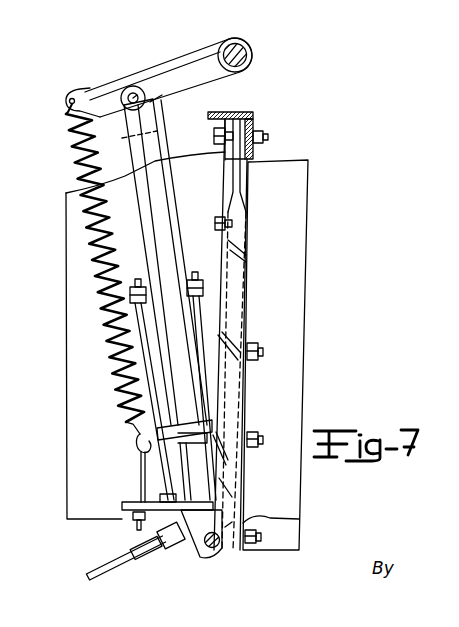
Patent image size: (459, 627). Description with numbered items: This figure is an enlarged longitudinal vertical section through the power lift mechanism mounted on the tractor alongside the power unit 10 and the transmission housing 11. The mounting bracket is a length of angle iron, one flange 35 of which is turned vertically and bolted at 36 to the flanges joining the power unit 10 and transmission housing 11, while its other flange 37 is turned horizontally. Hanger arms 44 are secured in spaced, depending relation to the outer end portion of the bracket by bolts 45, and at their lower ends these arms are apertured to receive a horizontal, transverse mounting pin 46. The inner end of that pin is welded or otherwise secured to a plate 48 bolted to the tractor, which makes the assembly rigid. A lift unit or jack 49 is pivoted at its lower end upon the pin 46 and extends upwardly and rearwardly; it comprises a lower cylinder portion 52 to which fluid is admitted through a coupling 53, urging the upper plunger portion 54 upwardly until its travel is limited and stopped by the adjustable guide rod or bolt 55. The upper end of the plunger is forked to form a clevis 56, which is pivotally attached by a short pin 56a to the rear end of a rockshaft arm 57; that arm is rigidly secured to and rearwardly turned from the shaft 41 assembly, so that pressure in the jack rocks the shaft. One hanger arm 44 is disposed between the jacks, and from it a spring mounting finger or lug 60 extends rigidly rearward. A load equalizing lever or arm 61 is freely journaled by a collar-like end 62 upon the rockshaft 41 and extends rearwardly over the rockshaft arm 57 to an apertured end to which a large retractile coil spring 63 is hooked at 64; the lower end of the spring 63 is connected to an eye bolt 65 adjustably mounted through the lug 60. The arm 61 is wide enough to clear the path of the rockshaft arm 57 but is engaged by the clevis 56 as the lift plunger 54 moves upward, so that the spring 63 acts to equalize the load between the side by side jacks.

The power unit 10 is at (308, 164).
The transmission housing 11 is at (64, 226).
The flange 35 is at (258, 130).
The bolt 36 is at (214, 136).
The flange 37 is at (237, 113).
The shaft 41 is at (251, 57).
The hanger arms 44 is at (243, 280).
The bolts 45 is at (268, 138).
The mounting pin 46 is at (205, 558).
The plate 48 is at (232, 527).
The lift unit 49 is at (176, 207).
The lower cylinder portion 52 is at (180, 463).
The coupling 53 is at (170, 546).
The upper plunger portion 54 is at (168, 249).
The adjustable guide rods or bolts 55 is at (198, 290).
The clevis 56 is at (66, 135).
The short pin 56a is at (133, 93).
The rockshaft arm 57 is at (187, 78).
The spring mounting finger or lug 60 is at (122, 518).
The load equalizing lever or arm 61 is at (197, 60).
The collar-like end 62 is at (246, 45).
The retractile coil spring 63 is at (92, 263).
The hook connection 64 is at (70, 99).
The eye bolt 65 is at (138, 462).